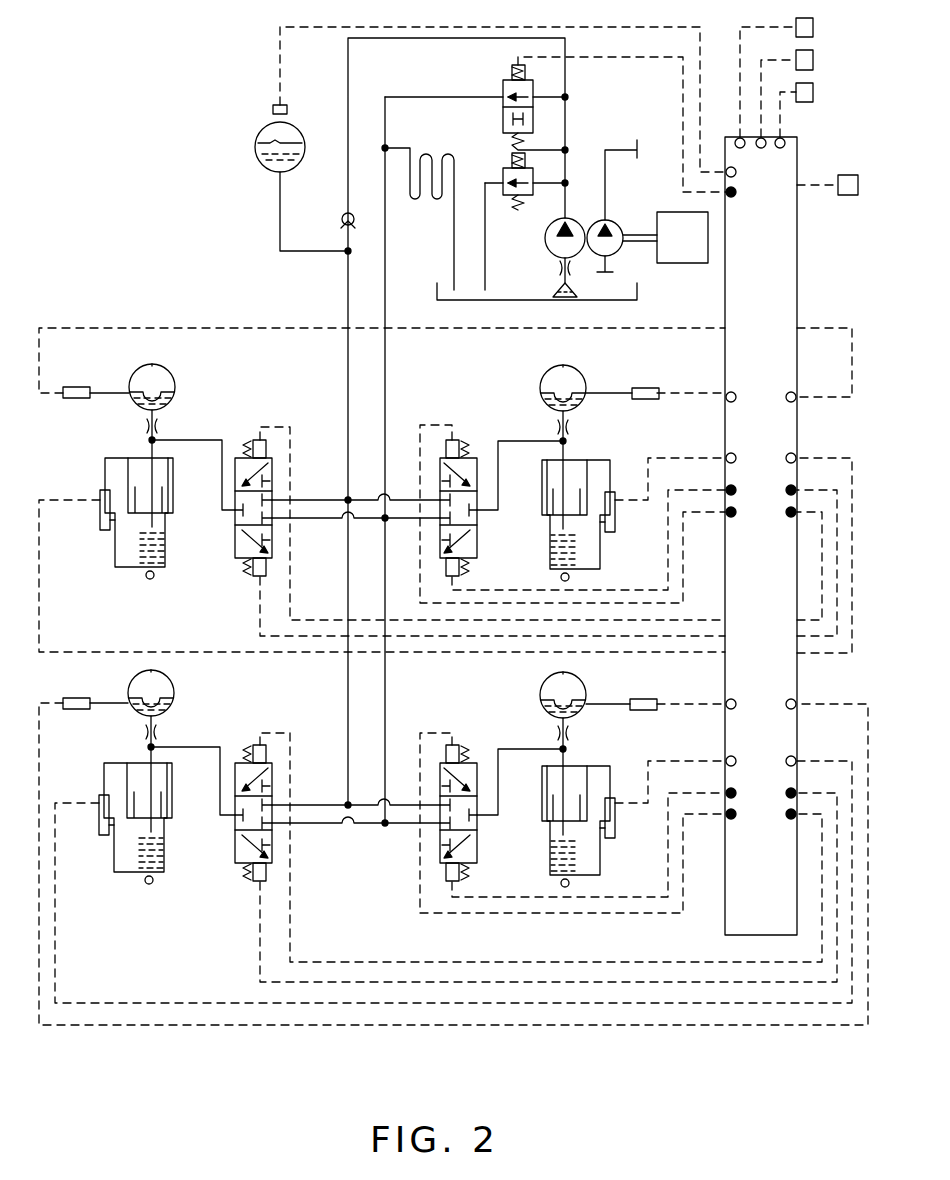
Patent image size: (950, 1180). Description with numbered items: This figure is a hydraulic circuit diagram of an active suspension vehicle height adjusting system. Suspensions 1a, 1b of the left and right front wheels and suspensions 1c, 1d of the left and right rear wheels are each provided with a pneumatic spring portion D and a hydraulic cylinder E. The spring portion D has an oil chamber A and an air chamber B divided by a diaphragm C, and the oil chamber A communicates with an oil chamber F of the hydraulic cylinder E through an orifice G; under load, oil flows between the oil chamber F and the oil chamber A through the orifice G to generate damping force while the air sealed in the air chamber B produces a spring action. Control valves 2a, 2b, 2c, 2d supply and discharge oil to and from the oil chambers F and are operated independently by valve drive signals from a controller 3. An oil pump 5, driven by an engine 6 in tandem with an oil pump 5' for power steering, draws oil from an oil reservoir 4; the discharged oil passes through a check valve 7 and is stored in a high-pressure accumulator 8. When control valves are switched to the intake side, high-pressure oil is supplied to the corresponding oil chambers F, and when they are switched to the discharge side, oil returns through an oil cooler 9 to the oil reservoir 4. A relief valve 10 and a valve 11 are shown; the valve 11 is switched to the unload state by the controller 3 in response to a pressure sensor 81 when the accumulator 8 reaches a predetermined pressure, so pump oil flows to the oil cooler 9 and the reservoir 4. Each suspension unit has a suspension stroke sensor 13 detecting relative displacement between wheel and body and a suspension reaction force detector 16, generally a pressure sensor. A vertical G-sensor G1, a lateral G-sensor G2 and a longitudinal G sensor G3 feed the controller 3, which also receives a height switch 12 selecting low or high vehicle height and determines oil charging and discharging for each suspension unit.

The suspension of left front wheel 1a is at (168, 525).
The suspension of right front wheel 1b is at (540, 507).
The suspension of left rear wheel 1c is at (168, 832).
The suspension of right rear wheel 1d is at (540, 825).
The control valve 2a is at (280, 477).
The control valve 2b is at (434, 479).
The control valve 2c is at (280, 775).
The control valve 2d is at (436, 841).
The controller 3 is at (797, 303).
The oil reservoir 4 is at (512, 298).
The oil pump 5 is at (571, 236).
The oil pump for power steering 5' is at (614, 206).
The engine 6 is at (680, 263).
The check valve 7 is at (342, 220).
The high-pressure accumulator 8 is at (268, 160).
The pressure sensor 81 is at (273, 103).
The oil cooler 9 is at (432, 213).
The relief valve 10 is at (512, 168).
The valve 11 is at (503, 112).
The height switch 12 is at (848, 195).
The suspension stroke sensor 13 is at (100, 522).
The suspension reaction force detector 16 is at (76, 400).
The vertical G-sensor G1 is at (813, 27).
The lateral G-sensor G2 is at (813, 60).
The longitudinal G sensor G3 is at (813, 92).
The oil chamber A is at (173, 398).
The air chamber B is at (158, 375).
The diaphragm C is at (165, 390).
The pneumatic spring portion D is at (130, 369).
The hydraulic cylinder E is at (136, 563).
The oil chamber of hydraulic cylinder F is at (165, 565).
The orifice G is at (143, 425).